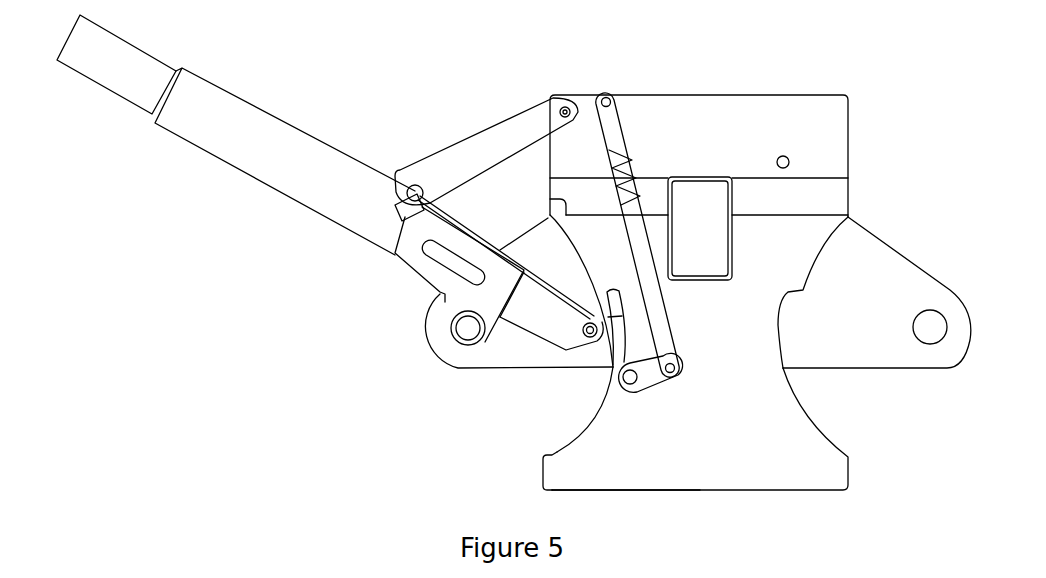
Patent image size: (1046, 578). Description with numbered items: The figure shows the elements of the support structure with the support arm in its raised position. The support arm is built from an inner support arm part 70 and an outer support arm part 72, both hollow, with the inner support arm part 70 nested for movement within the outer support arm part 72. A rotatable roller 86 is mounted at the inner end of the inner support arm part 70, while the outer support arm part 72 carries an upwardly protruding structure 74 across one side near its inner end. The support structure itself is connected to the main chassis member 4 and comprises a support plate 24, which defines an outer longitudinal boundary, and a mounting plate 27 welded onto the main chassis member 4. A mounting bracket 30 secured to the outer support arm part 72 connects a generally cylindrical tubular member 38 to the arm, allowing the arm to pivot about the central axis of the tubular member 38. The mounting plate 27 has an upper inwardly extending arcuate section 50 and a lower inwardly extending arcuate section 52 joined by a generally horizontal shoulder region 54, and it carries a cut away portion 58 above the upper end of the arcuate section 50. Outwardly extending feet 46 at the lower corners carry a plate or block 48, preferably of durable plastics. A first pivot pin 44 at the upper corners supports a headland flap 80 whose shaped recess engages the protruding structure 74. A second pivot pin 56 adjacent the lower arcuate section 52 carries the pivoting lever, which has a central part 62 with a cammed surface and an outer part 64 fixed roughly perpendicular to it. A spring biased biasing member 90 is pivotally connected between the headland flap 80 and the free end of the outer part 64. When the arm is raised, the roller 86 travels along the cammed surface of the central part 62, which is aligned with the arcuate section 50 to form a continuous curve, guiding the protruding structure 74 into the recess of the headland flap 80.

The main chassis member 4 is at (734, 247).
The support plate 24 is at (883, 259).
The mounting plate 27 is at (797, 450).
The mounting bracket 30 is at (430, 232).
The cylindrical tubular member 38 is at (463, 341).
The first pivot pin 44 is at (567, 108).
The outwardly extending feet 46 is at (568, 477).
The plate or block 48 is at (540, 480).
The first upper inwardly extending arcuate section 50 is at (572, 246).
The second lower inwardly extending arcuate section 52 is at (563, 444).
The shoulder region 54 is at (606, 293).
The second pivot pin 56 is at (628, 385).
The cut away portion 58 is at (568, 208).
The central part 62 is at (608, 317).
The outer part 64 is at (650, 375).
The inner support arm part 70 is at (100, 65).
The outer support arm part 72 is at (248, 153).
The protruding structure 74 is at (416, 186).
The headland flap 80 is at (467, 158).
The rotatable roller 86 is at (590, 338).
The biasing member 90 is at (618, 127).